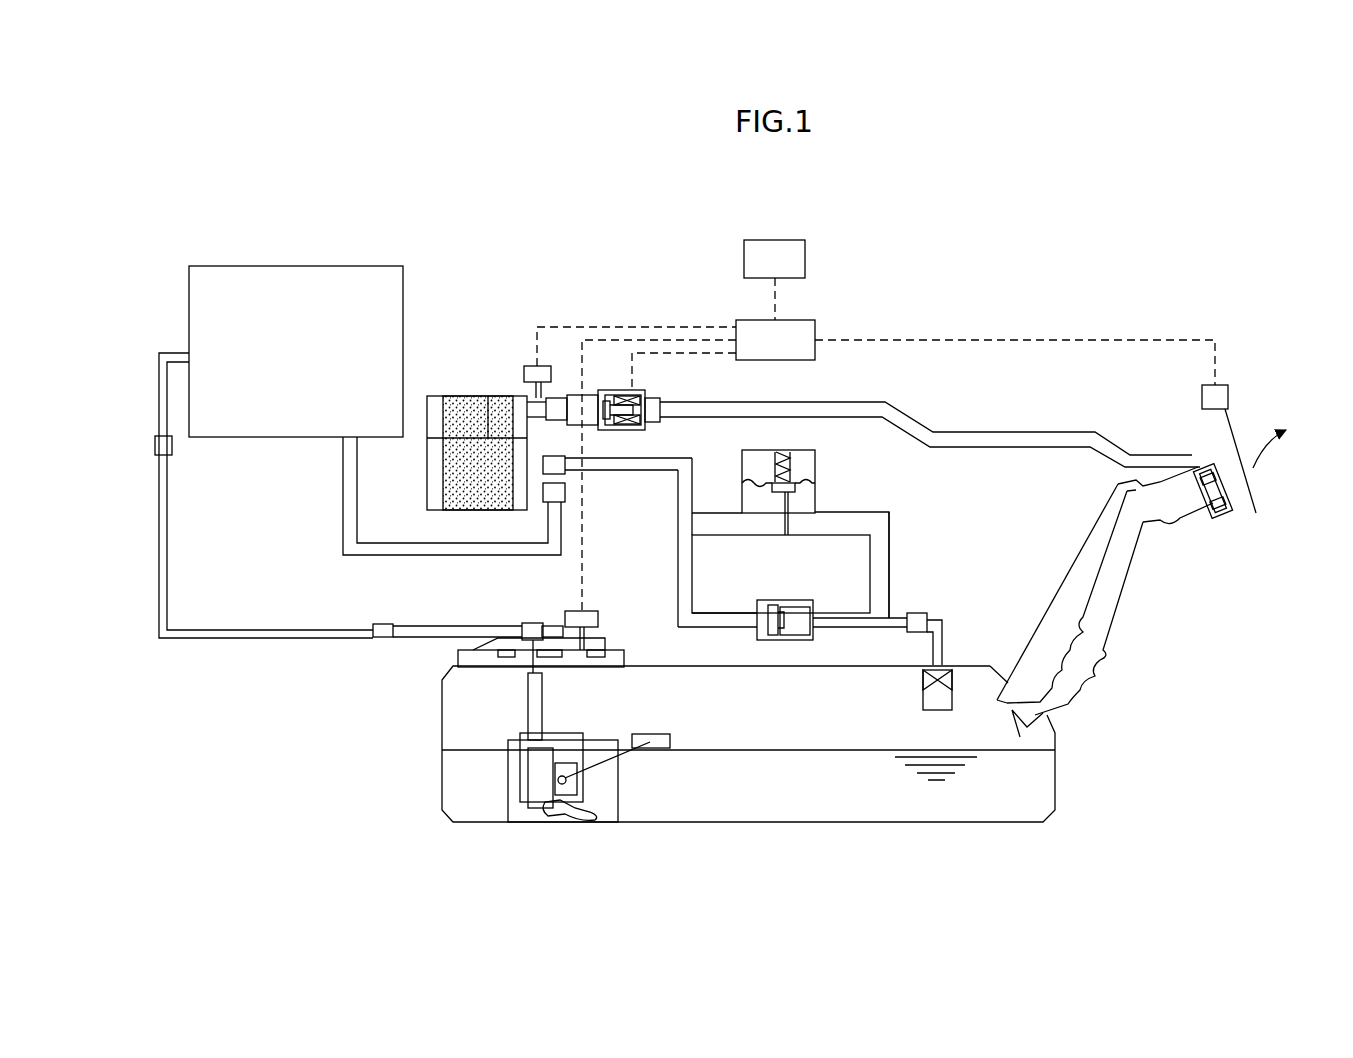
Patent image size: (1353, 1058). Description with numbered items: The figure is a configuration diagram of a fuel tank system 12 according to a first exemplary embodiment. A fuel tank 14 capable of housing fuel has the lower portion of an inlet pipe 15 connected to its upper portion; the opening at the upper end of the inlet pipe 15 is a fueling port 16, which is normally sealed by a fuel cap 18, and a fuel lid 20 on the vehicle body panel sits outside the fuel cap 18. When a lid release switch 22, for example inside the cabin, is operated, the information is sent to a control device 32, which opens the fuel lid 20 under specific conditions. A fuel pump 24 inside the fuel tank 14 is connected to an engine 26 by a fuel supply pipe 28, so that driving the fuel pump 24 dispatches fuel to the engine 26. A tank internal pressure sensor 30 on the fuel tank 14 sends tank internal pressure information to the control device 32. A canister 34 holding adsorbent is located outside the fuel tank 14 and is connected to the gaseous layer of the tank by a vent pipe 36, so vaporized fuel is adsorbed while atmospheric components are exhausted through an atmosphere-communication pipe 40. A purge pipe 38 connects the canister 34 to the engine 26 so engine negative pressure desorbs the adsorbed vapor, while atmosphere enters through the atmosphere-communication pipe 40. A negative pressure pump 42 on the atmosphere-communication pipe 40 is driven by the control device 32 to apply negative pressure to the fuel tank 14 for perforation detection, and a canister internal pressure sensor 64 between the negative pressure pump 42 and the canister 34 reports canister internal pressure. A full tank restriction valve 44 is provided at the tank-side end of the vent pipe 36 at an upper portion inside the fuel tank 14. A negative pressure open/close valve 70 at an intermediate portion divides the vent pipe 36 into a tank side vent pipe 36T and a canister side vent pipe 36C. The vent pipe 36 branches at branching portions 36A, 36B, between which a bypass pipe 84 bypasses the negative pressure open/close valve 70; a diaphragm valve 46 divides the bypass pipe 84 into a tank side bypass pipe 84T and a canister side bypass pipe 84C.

The fuel tank system 12 is at (915, 250).
The fuel tank 14 is at (1057, 787).
The inlet pipe 15 is at (1122, 603).
The fueling port 16 is at (1185, 510).
The fuel cap 18 is at (1218, 517).
The fuel lid 20 is at (1257, 507).
The lid release switch 22 is at (766, 240).
The fuel pump 24 is at (535, 812).
The engine 26 is at (256, 266).
The fuel supply pipe 28 is at (296, 638).
The tank internal pressure sensor 30 is at (565, 613).
The control device 32 is at (815, 320).
The canister 34 is at (470, 396).
The vent pipe 36 is at (626, 475).
The branching portion 36A is at (882, 630).
The branching portion 36B is at (677, 530).
The canister side vent pipe 36C is at (737, 628).
The tank side vent pipe 36T is at (842, 612).
The purge pipe 38 is at (343, 528).
The atmosphere-communication pipe 40 is at (913, 413).
The negative pressure pump 42 is at (600, 390).
The full tank restriction valve 44 is at (952, 697).
The diaphragm valve 46 is at (805, 449).
The canister internal pressure sensor 64 is at (530, 366).
The negative pressure open/close valve 70 is at (771, 598).
The bypass pipe 84 is at (892, 563).
The canister side bypass pipe 84C is at (719, 512).
The tank side bypass pipe 84T is at (851, 512).